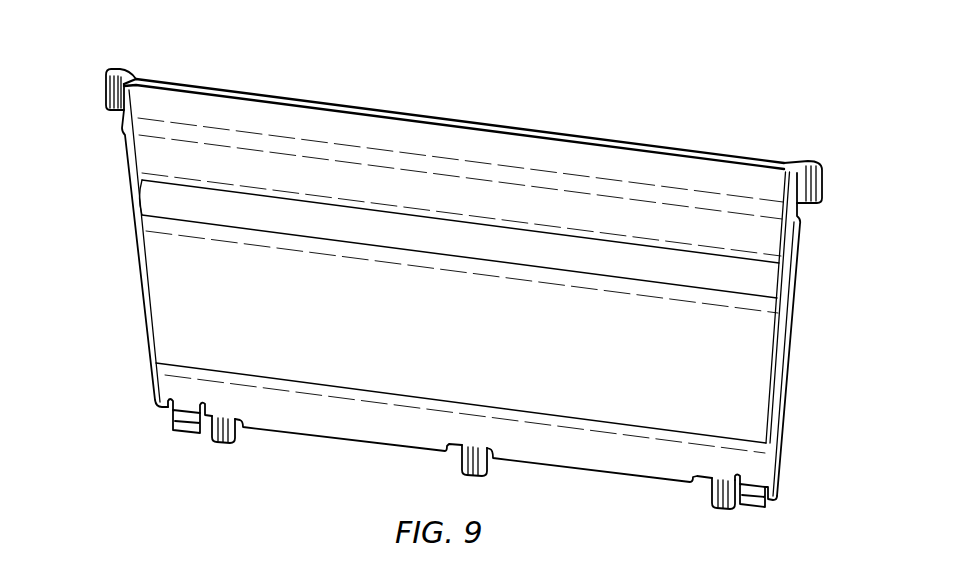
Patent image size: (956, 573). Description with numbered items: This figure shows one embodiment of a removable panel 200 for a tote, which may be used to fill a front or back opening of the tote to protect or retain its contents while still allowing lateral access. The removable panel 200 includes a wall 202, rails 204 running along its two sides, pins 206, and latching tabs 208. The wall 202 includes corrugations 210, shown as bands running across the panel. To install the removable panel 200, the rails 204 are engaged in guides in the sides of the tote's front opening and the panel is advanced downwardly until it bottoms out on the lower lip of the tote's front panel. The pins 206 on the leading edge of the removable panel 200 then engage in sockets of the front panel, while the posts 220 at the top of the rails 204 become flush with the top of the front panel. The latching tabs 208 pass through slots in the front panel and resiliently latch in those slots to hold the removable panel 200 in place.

The removable panel 200 is at (98, 150).
The wall 202 is at (491, 343).
The rails 204 is at (141, 284).
The pins 206 is at (225, 443).
The latching tabs 208 is at (185, 432).
The corrugations 210 is at (491, 253).
The posts 220 is at (118, 70).